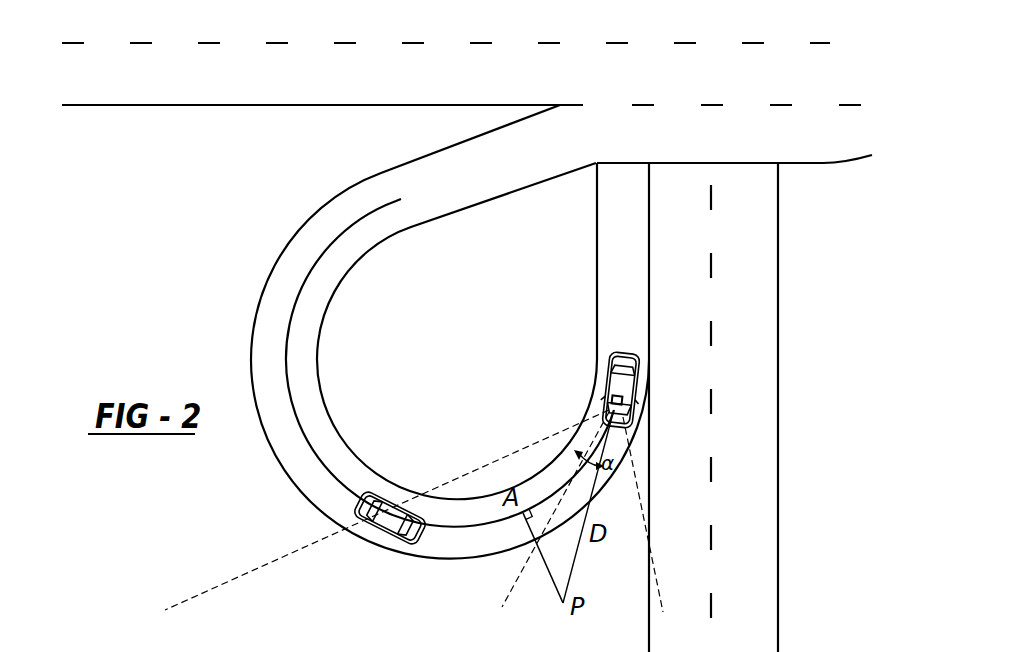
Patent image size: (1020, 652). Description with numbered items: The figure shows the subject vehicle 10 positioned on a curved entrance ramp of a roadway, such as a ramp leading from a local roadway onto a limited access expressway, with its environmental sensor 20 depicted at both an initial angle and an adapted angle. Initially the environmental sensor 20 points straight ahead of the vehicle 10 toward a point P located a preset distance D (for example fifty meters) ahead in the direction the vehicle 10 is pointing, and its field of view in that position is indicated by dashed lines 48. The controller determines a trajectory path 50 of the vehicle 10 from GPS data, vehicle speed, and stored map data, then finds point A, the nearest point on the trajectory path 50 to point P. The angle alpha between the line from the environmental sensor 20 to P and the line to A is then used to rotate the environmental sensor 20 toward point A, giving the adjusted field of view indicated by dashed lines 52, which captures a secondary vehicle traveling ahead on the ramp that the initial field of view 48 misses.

The subject vehicle 10 is at (630, 350).
The environmental sensor 20 is at (614, 400).
The dashed lines indicating initial field of view 48 is at (513, 592).
The trajectory path 50 is at (340, 230).
The dashed lines indicating adjusted field of view 52 is at (245, 574).